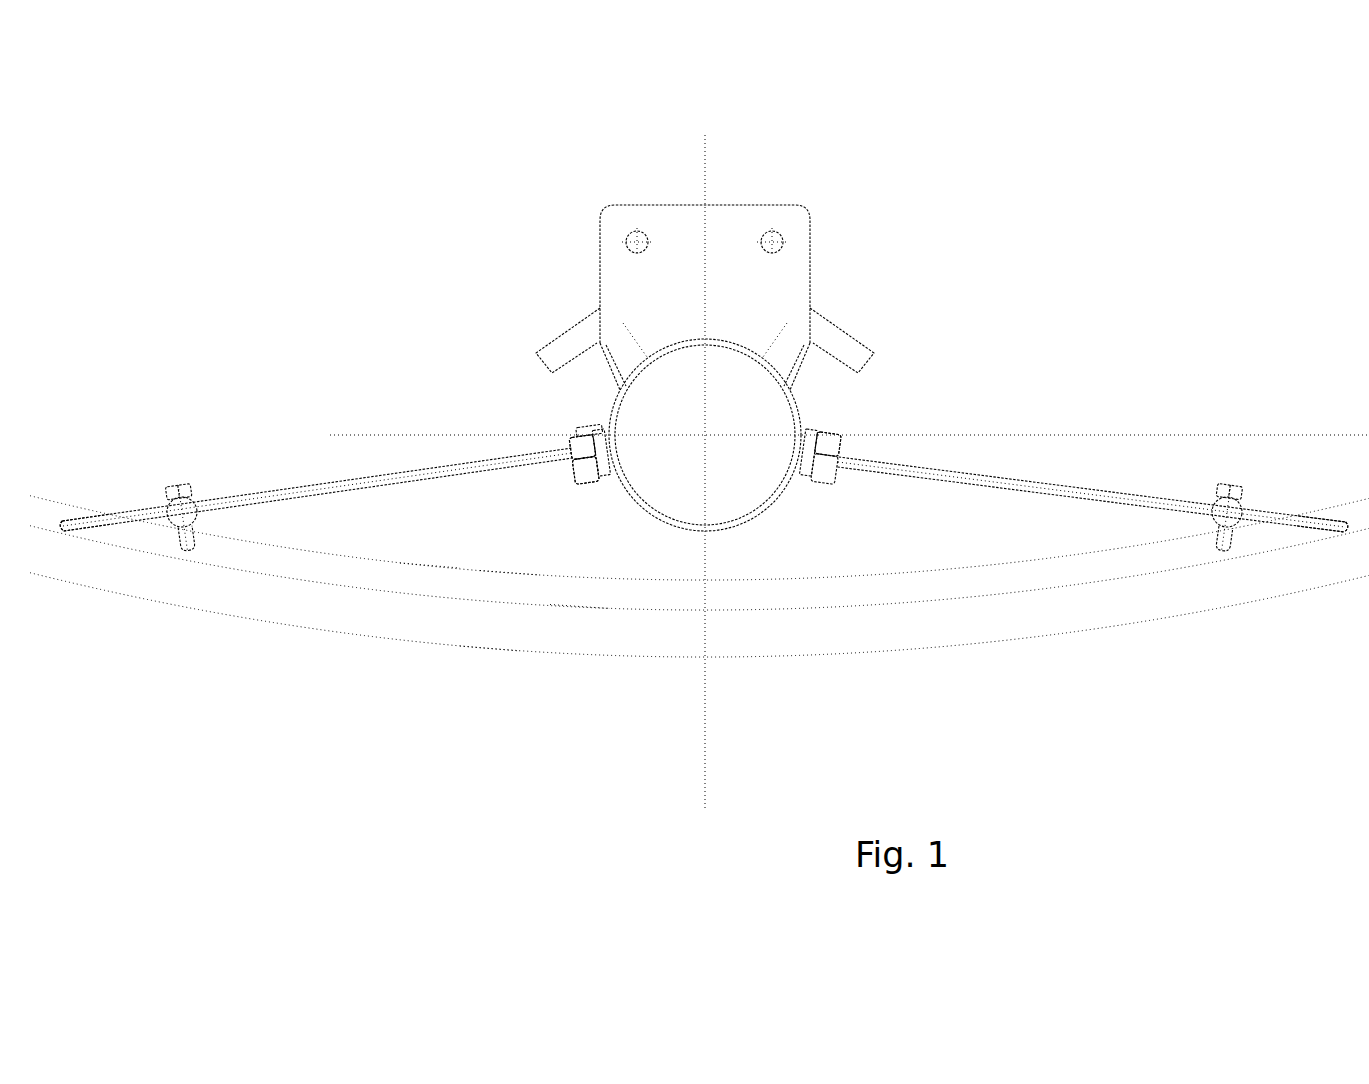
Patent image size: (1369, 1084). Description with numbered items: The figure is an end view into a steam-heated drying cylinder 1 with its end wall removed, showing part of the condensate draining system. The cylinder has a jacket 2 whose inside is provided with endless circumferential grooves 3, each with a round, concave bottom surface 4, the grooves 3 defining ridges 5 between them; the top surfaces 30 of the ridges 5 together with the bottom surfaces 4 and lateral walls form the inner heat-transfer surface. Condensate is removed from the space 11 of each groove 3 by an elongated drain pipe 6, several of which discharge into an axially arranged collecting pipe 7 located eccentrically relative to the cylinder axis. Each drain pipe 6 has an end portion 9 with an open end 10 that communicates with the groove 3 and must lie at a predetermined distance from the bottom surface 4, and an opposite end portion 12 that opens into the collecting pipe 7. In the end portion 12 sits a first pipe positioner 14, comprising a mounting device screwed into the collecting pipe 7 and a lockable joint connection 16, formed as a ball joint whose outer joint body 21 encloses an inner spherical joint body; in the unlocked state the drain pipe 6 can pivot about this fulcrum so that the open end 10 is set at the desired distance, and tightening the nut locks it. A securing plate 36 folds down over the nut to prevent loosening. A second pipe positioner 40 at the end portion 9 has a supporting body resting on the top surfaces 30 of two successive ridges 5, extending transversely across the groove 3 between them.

The drying cylinder 1 is at (352, 636).
The jacket 2 is at (482, 648).
The grooves 3 is at (418, 582).
The bottom surface 4 is at (582, 607).
The ridges 5 is at (503, 578).
The drain pipe 6 is at (297, 490).
The collecting pipe 7 is at (800, 409).
The end portion 9 is at (79, 521).
The open end 10 is at (64, 530).
The space 11 is at (572, 597).
The end portion 12 is at (559, 455).
The first pipe positioner 14 is at (591, 487).
The lockable joint connection 16 is at (589, 424).
The outer joint body 21 is at (818, 486).
The top surfaces 30 is at (352, 558).
The securing plate 36 is at (822, 430).
The second pipe positioner 40 is at (188, 476).